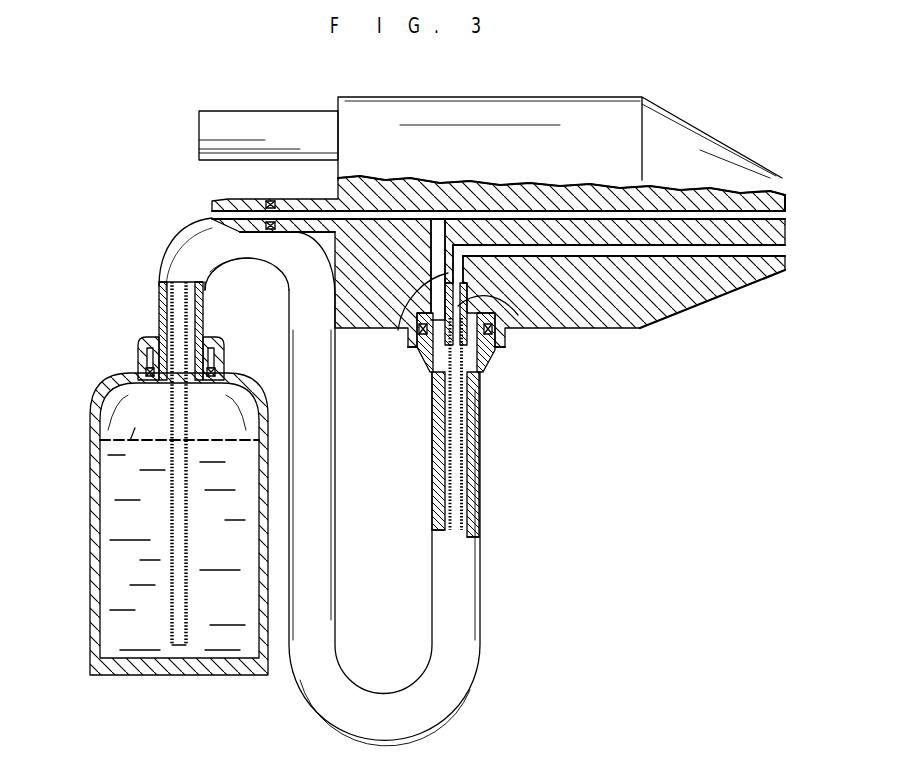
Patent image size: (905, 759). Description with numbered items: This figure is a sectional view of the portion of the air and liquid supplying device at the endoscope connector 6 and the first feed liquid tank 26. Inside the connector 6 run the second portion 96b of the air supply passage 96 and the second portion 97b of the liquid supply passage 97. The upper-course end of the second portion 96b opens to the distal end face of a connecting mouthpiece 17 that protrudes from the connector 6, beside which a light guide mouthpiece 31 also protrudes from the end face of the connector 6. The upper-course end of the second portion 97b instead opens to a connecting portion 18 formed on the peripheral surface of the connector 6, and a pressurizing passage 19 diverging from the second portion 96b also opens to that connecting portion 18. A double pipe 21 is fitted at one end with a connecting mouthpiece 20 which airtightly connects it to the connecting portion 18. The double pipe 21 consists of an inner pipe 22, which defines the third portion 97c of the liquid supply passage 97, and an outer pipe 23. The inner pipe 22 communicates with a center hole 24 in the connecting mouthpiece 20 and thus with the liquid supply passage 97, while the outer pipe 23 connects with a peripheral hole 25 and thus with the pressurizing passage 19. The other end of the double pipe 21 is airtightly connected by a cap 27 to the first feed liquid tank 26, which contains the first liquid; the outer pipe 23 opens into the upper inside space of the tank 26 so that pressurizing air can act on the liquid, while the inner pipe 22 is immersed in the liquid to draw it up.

The light guide mouthpiece 31 is at (272, 128).
The connector 6 is at (597, 107).
The air supply passage 96 is at (680, 205).
The second portion of the air supply passage 96b is at (735, 222).
The connecting mouthpiece 17 is at (236, 205).
The liquid supply passage 97 is at (742, 262).
The second portion of the liquid supply passage 97b is at (690, 285).
The third portion of the liquid supply passage 97c is at (458, 487).
The center hole 24 is at (535, 330).
The pressurizing passage 19 is at (407, 331).
The peripheral hole 25 is at (428, 360).
The connecting portion 18 is at (500, 348).
The connecting mouthpiece 20 is at (488, 372).
The inner pipe 22 is at (190, 318).
The outer pipe 23 is at (162, 305).
The cap 27 is at (222, 345).
The first feed liquid tank 26 is at (92, 405).
The double pipe 21 is at (494, 562).